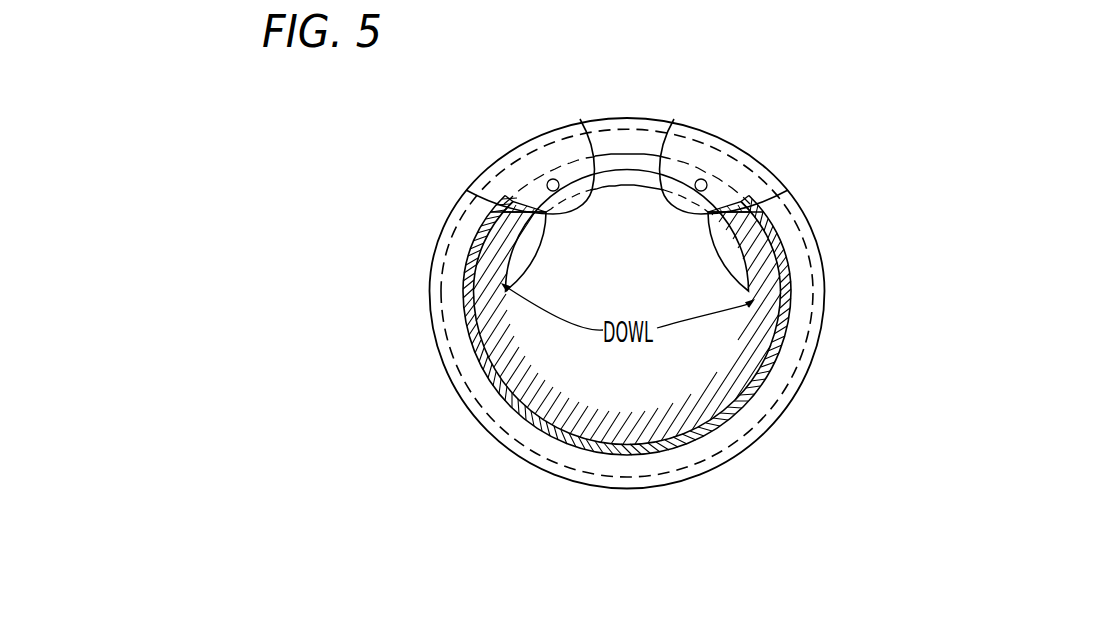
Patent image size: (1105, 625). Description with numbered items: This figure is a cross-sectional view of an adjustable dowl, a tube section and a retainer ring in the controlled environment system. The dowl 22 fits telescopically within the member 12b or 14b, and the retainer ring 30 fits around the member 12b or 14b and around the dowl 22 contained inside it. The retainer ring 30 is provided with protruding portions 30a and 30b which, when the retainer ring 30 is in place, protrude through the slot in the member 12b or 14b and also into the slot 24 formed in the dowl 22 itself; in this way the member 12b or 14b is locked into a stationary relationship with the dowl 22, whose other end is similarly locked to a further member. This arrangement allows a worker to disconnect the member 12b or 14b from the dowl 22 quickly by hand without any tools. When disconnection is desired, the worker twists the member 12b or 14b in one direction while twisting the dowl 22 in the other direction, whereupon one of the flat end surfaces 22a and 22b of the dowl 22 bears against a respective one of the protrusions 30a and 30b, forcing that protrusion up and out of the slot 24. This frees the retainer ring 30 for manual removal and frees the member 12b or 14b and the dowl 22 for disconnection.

The retainer ring 30 is at (747, 299).
The protruding portion 30a is at (531, 153).
The protruding portion 30b is at (722, 157).
The dowl 22 is at (630, 294).
The flat end surface 22a is at (752, 212).
The flat end surface 22b is at (490, 215).
The slot 24 is at (627, 194).
The member 12b is at (697, 303).
The member 14b is at (808, 225).